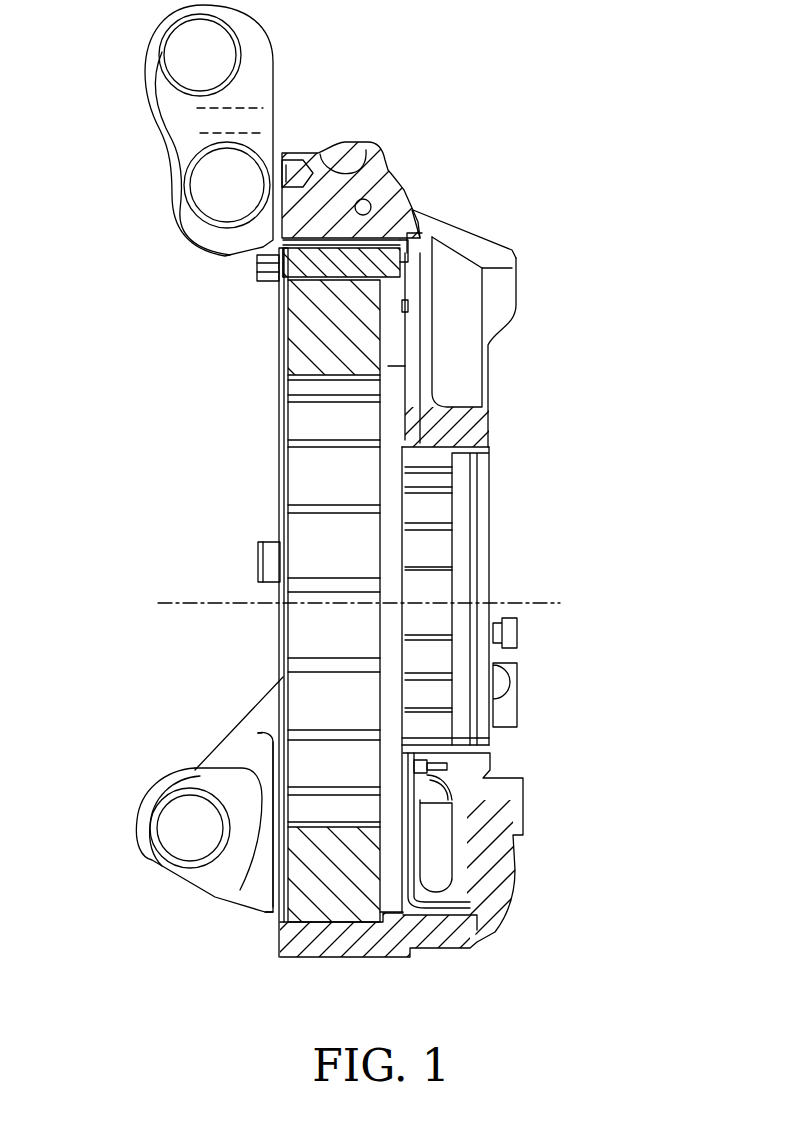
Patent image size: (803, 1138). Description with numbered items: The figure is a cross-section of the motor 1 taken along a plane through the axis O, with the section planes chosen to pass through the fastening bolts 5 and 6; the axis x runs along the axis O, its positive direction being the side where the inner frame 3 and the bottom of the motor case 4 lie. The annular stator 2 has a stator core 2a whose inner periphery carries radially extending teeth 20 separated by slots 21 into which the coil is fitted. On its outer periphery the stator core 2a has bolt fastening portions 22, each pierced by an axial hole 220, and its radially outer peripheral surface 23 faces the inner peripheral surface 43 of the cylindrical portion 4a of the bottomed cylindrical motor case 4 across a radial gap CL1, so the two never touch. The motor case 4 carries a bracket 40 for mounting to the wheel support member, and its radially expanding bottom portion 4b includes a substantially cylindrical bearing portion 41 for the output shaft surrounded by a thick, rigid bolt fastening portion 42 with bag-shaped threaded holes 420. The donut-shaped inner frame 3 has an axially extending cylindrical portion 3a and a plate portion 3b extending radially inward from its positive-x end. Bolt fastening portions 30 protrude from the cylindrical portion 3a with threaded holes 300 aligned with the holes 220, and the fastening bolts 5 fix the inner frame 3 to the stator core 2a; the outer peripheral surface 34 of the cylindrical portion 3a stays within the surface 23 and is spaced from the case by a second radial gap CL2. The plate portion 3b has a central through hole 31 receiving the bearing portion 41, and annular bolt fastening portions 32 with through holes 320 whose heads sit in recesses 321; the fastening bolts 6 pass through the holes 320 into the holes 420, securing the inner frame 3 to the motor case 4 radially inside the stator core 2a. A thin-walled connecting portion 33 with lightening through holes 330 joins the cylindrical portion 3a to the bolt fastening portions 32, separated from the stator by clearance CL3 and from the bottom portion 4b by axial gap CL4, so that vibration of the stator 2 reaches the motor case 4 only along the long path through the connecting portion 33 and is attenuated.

The motor 1 is at (424, 120).
The stator 2 is at (283, 352).
The stator core 2a is at (317, 912).
The inner frame 3 is at (430, 422).
The cylindrical portion 3a is at (428, 915).
The plate portion 3b is at (432, 387).
The motor case 4 is at (418, 207).
The cylindrical portion 4a is at (352, 196).
The bottom portion 4b is at (430, 368).
The fastening bolt 5 is at (257, 270).
The fastening bolt 6 is at (490, 780).
The tooth 20 is at (300, 700).
The slot 21 is at (273, 735).
The bolt fastening portion 22 is at (283, 317).
The outer peripheral surface 23 is at (282, 927).
The bolt fastening portion 30 is at (440, 240).
The through hole 31 is at (447, 450).
The bolt fastening portion 32 is at (520, 831).
The connecting portion 33 is at (490, 330).
The outer peripheral surface 34 is at (405, 918).
The bracket 40 is at (243, 32).
The bearing portion 41 is at (455, 474).
The bolt fastening portion 42 is at (480, 413).
The inner peripheral surface 43 is at (345, 923).
The hole 220 is at (300, 253).
The hole 300 is at (510, 272).
The through hole 320 is at (455, 760).
The recess 321 is at (443, 796).
The through hole 330 is at (500, 900).
The hole 420 is at (420, 800).
The radial gap CL1 is at (360, 923).
The radial gap CL2 is at (418, 215).
The clearance CL3 is at (437, 353).
The axial gap CL4 is at (433, 340).
The axis O is at (367, 603).
The axis x is at (632, 962).